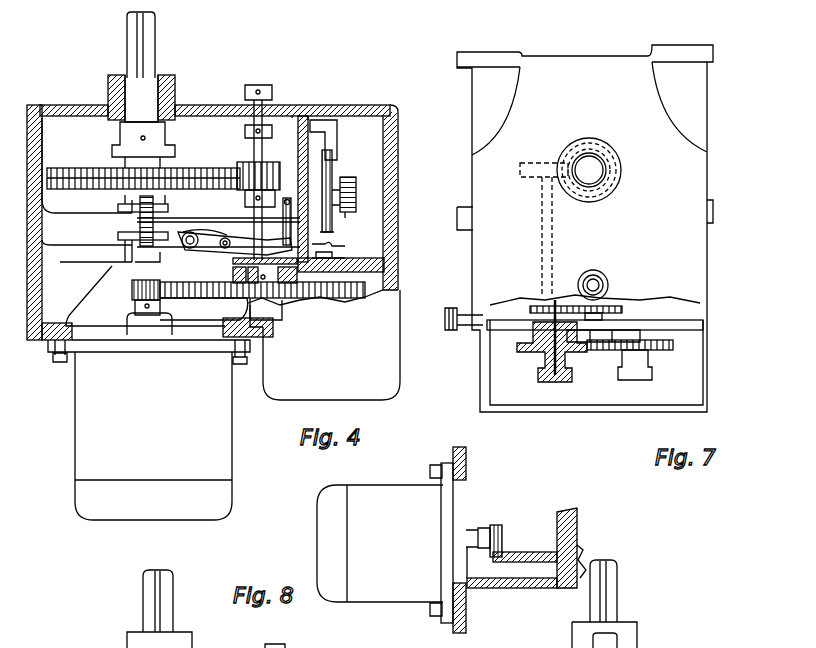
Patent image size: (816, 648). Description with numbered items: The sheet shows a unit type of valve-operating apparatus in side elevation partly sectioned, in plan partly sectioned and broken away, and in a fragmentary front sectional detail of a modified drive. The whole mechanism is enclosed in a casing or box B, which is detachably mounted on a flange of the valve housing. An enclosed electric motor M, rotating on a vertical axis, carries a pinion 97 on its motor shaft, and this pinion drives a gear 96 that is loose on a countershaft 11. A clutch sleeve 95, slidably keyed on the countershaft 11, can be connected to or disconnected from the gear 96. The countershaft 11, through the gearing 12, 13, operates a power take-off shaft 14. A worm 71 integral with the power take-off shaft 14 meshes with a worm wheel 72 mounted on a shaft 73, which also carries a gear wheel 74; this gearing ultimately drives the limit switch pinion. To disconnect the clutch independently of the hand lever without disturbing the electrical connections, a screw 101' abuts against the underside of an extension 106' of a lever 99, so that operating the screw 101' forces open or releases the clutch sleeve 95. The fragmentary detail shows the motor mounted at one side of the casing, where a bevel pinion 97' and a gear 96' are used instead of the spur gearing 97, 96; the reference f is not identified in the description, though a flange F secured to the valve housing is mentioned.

In FIG. 4, the casing or box B is at (322, 105).
In FIG. 4, the power take-off shaft 14 is at (148, 100).
In FIG. 4, the gearing 13 is at (190, 168).
In FIG. 4, the countershaft 11 is at (253, 155).
In FIG. 4, the gearing 12 is at (268, 167).
In FIG. 4, the gear wheel 74 is at (287, 200).
In FIG. 4, the worm 71 is at (168, 214).
In FIG. 4, the worm wheel 72 is at (146, 248).
In FIG. 4, the shaft 73 is at (208, 222).
In FIG. 4, the lever 99 is at (230, 247).
In FIG. 4, the clutch sleeve 95 is at (232, 268).
In FIG. 4, the gear 96 is at (262, 301).
In FIG. 4, the pinion 97 is at (132, 307).
In FIG. 4, the extension of lever 106' is at (347, 233).
In FIG. 4, the screw 101' is at (352, 250).
In FIG. 4, the electric motor M is at (153, 436).
In FIG. 8, the bevel pinion 97' is at (505, 517).
In FIG. 8, the gear 96' is at (546, 540).
In FIG. 8, the shaft f is at (38, 647).